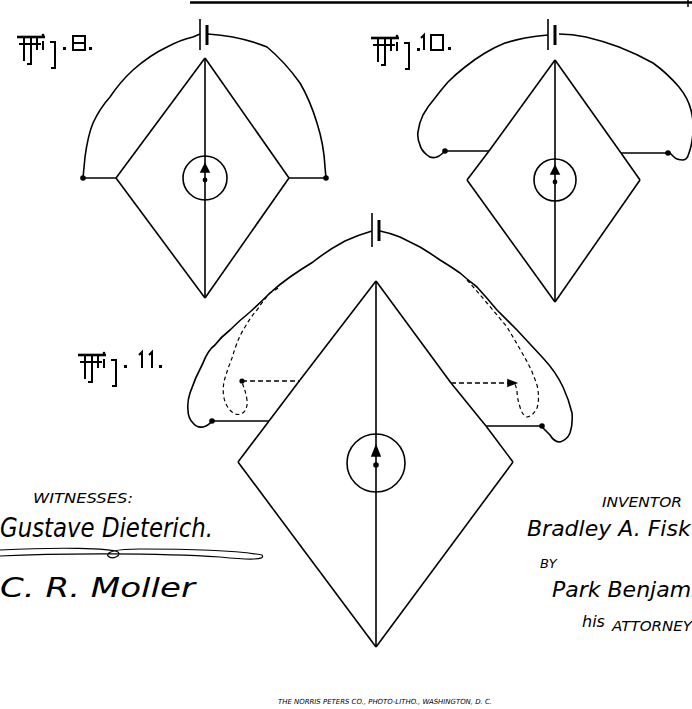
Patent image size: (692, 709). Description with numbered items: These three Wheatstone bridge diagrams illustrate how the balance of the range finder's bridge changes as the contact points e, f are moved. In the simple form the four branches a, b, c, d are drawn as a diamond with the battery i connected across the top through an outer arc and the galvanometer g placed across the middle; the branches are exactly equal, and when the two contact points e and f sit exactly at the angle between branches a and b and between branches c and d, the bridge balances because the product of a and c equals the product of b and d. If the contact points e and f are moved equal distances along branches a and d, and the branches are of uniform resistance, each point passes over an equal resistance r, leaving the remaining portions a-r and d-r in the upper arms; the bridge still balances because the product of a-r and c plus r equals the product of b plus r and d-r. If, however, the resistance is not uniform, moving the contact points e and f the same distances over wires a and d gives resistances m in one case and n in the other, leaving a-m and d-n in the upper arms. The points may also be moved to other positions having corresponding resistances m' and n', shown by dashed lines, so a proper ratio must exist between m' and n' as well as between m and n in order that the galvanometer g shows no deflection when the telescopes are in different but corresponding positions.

In FIG. 9, the bridge branch a is at (160, 118).
In FIG. 10, the bridge branch a is at (510, 105).
In FIG. 11, the bridge branch a is at (324, 330).
In FIG. 9, the bridge branch d is at (247, 118).
In FIG. 10, the bridge branch d is at (592, 106).
In FIG. 11, the bridge branch d is at (422, 332).
In FIG. 9, the bridge branch b is at (160, 238).
In FIG. 10, the bridge branch b is at (511, 241).
In FIG. 11, the bridge branch b is at (307, 554).
In FIG. 9, the bridge branch c is at (247, 238).
In FIG. 10, the bridge branch c is at (597, 241).
In FIG. 11, the bridge branch c is at (444, 554).
In FIG. 9, the contact point e is at (98, 187).
In FIG. 10, the contact point e is at (466, 160).
In FIG. 11, the contact point e is at (239, 431).
In FIG. 9, the contact point f is at (308, 187).
In FIG. 10, the contact point f is at (645, 162).
In FIG. 11, the contact point f is at (515, 435).
In FIG. 9, the galvanometer g is at (210, 178).
In FIG. 9, the battery i is at (204, 96).
In FIG. 10, the battery i is at (555, 87).
In FIG. 11, the battery i is at (380, 326).
In FIG. 10, the resistance r is at (553, 166).
In FIG. 10, the remaining resistance of branch a a-r is at (510, 105).
In FIG. 10, the remaining resistance of branch d d-r is at (592, 106).
In FIG. 11, the remaining resistance of branch a a-m is at (324, 330).
In FIG. 11, the remaining resistance of branch d d-n is at (422, 332).
In FIG. 11, the resistance m is at (256, 441).
In FIG. 11, the resistance m' is at (266, 354).
In FIG. 11, the resistance n is at (496, 444).
In FIG. 11, the resistance n' is at (490, 353).